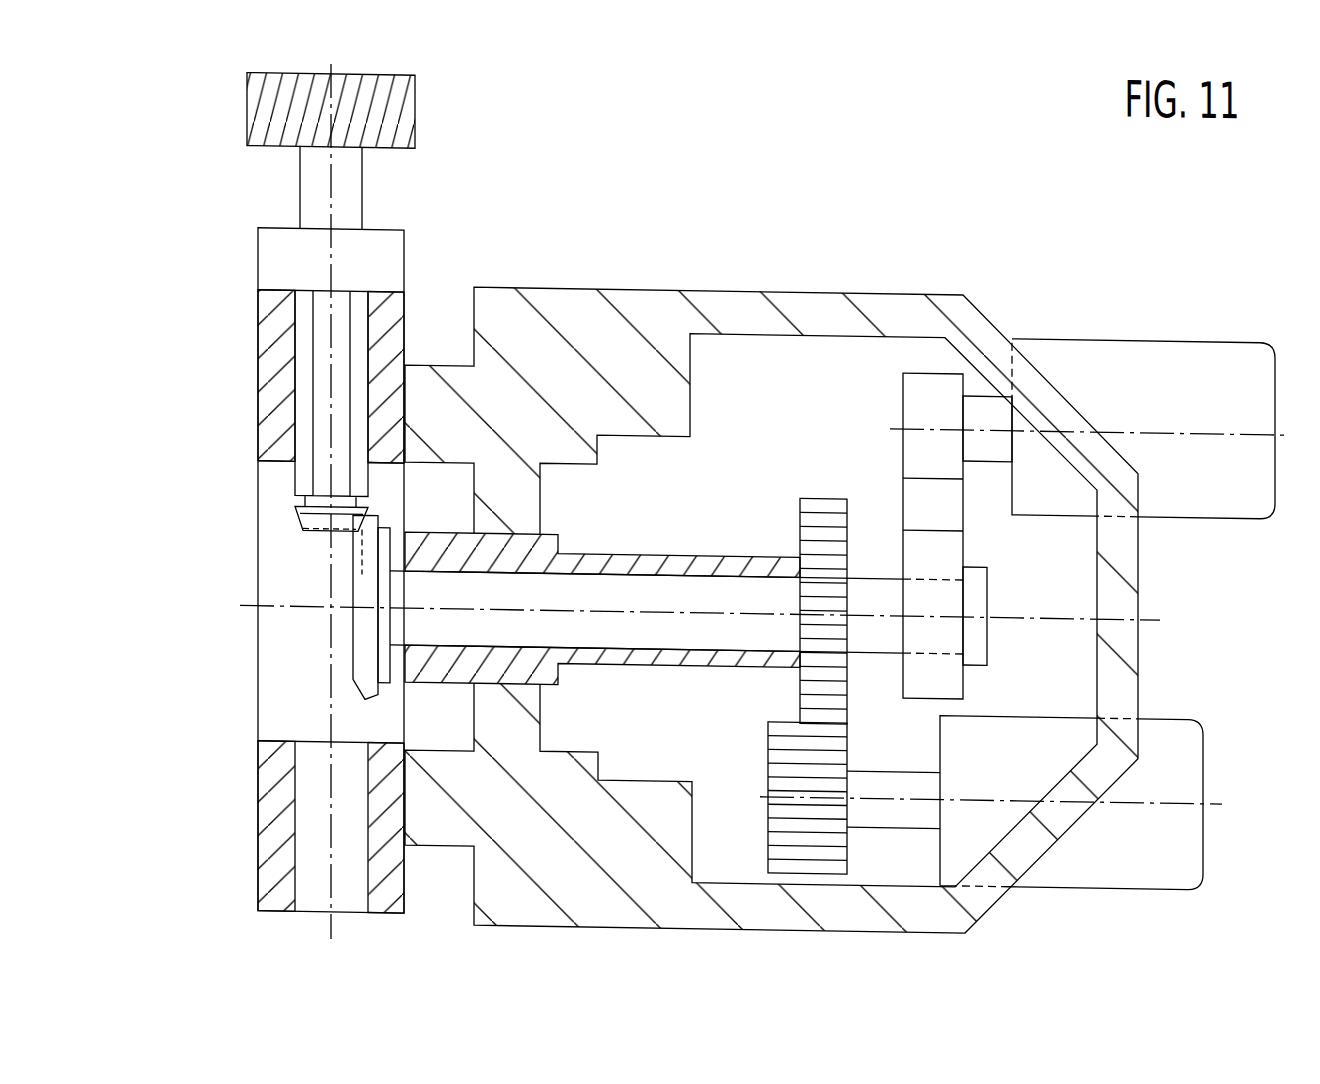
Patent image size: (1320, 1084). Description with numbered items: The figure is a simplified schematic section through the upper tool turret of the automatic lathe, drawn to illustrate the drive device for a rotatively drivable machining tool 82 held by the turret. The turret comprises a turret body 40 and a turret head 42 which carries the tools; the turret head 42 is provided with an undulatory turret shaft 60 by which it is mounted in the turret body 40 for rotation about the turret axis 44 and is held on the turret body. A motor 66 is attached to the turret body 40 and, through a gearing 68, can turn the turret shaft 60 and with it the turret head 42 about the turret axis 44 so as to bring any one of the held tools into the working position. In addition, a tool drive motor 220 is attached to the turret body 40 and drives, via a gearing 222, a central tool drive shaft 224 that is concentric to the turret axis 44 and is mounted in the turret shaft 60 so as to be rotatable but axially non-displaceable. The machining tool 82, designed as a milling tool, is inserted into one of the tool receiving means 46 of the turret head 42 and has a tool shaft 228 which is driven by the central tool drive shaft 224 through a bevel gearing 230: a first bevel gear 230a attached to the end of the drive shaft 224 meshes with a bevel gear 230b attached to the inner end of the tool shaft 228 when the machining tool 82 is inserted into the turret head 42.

The turret body 40 is at (605, 276).
The turret head 42 is at (248, 430).
The turret axis 44 is at (650, 606).
The tool receiving means 46 is at (292, 336).
The turret shaft 60 is at (658, 553).
The motor 66 is at (1197, 705).
The gearing 68 is at (778, 699).
The rotatively drivable machining tool 82 is at (428, 114).
The tool drive motor 220 is at (1225, 315).
The gearing 222 is at (984, 521).
The central tool drive shaft 224 is at (880, 559).
The tool shaft 228 is at (326, 382).
The bevel gearing 230 is at (340, 552).
The first bevel gear 230a is at (362, 643).
The bevel gear 230b is at (296, 514).